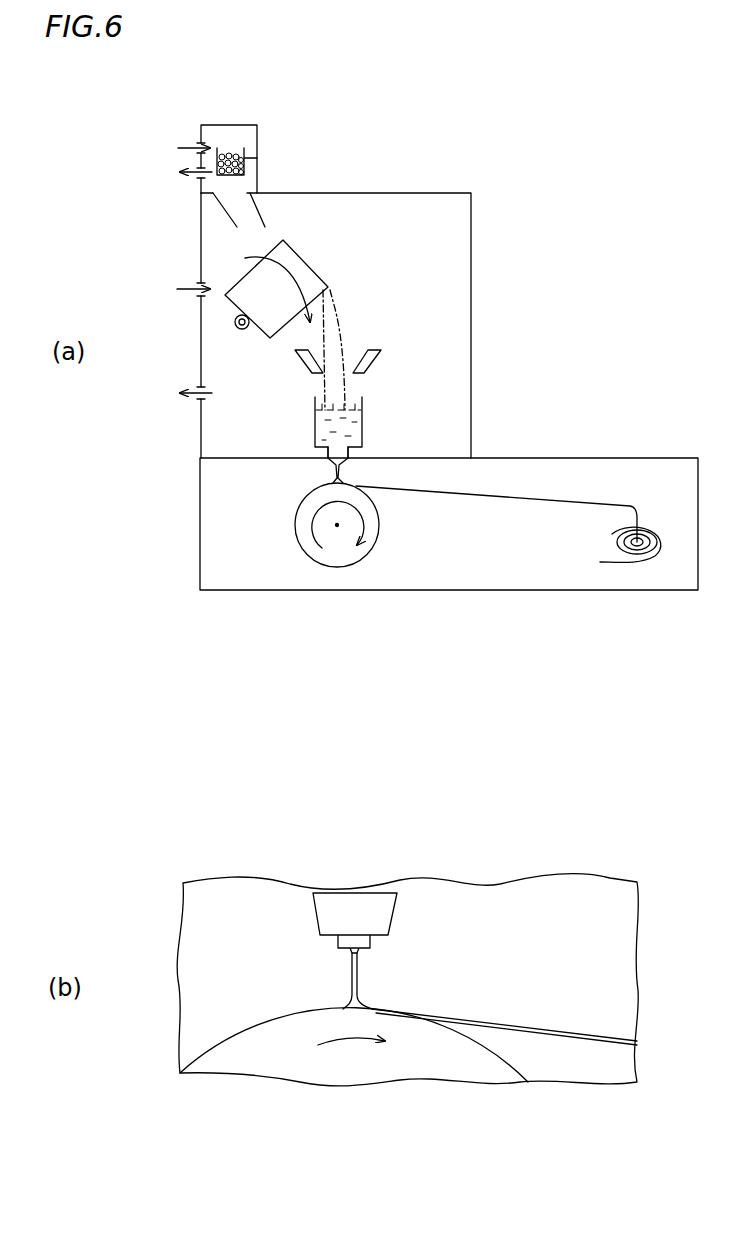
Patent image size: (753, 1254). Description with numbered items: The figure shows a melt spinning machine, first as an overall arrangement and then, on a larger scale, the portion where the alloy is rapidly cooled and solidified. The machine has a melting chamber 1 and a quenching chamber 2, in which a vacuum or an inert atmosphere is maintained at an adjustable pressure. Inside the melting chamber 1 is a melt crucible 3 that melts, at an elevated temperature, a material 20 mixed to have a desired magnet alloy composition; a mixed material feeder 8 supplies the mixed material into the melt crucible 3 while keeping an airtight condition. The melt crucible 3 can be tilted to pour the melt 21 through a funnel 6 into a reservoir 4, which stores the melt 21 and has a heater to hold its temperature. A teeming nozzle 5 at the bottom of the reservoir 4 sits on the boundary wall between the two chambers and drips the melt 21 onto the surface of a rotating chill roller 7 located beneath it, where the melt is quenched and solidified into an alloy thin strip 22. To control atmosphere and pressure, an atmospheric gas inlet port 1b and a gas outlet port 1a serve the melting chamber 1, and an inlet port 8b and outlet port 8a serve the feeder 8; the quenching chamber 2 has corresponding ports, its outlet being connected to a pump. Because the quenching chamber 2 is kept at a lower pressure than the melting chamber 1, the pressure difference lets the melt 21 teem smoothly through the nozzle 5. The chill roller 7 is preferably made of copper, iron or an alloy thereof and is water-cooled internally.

The melting chamber 1 is at (473, 248).
The gas outlet port 1a is at (179, 394).
The atmospheric gas inlet port 1b is at (178, 291).
The quenching chamber 2 is at (585, 458).
The melt crucible 3 is at (277, 307).
The reservoir 4 is at (365, 425).
The teeming nozzle 5 is at (328, 465).
The funnel 6 is at (300, 364).
The rotating chill roller 7 is at (294, 521).
The mixed material feeder 8 is at (224, 125).
The gas outlet port 8a is at (179, 173).
The atmospheric gas inlet port 8b is at (178, 149).
The material 20 is at (263, 154).
The melt 21 is at (313, 428).
The alloy thin strip 22 is at (450, 496).